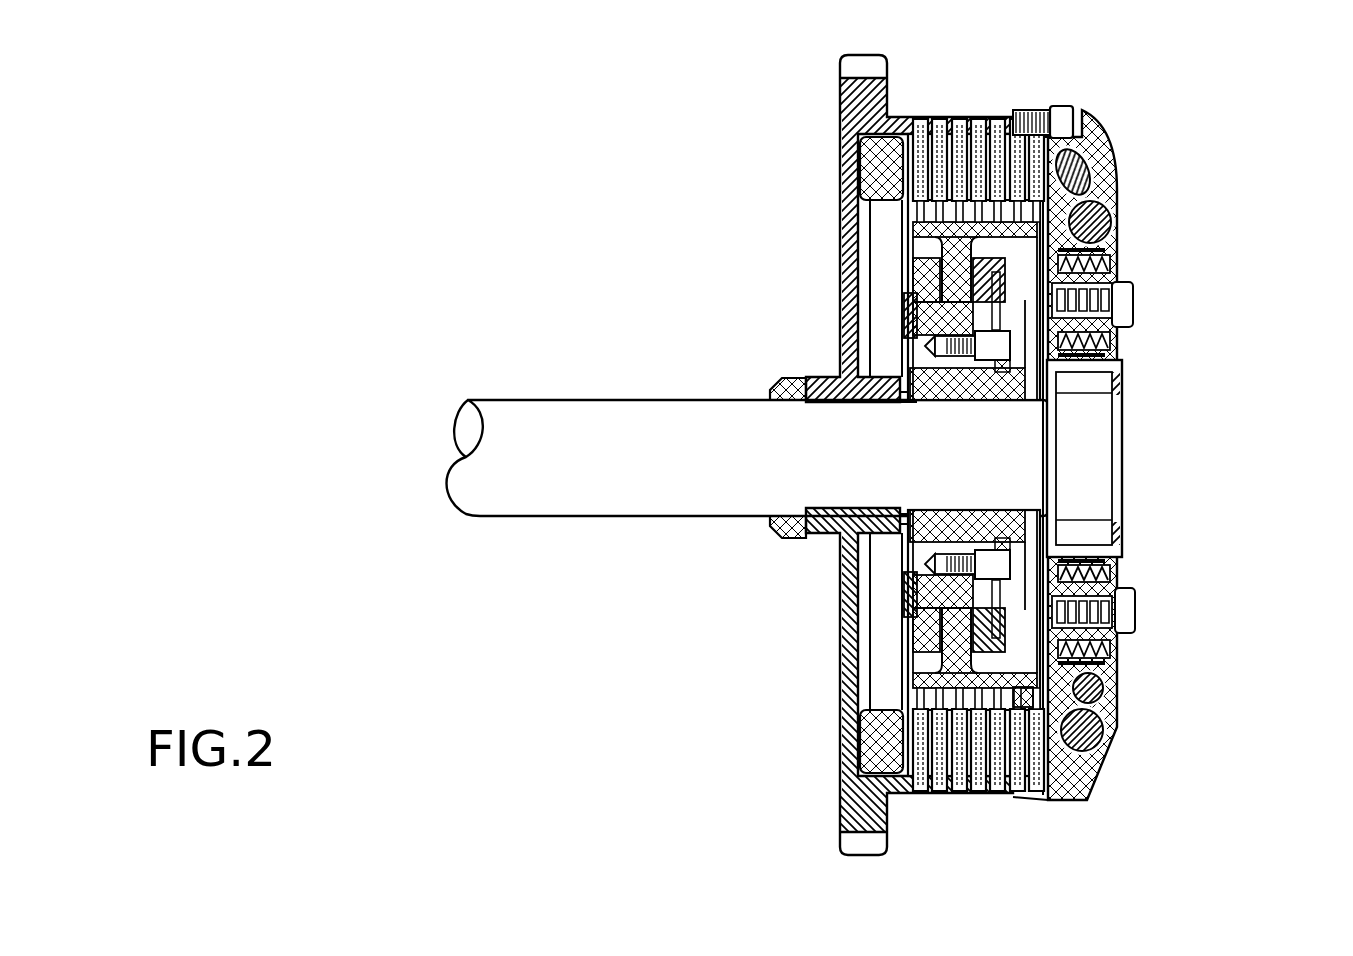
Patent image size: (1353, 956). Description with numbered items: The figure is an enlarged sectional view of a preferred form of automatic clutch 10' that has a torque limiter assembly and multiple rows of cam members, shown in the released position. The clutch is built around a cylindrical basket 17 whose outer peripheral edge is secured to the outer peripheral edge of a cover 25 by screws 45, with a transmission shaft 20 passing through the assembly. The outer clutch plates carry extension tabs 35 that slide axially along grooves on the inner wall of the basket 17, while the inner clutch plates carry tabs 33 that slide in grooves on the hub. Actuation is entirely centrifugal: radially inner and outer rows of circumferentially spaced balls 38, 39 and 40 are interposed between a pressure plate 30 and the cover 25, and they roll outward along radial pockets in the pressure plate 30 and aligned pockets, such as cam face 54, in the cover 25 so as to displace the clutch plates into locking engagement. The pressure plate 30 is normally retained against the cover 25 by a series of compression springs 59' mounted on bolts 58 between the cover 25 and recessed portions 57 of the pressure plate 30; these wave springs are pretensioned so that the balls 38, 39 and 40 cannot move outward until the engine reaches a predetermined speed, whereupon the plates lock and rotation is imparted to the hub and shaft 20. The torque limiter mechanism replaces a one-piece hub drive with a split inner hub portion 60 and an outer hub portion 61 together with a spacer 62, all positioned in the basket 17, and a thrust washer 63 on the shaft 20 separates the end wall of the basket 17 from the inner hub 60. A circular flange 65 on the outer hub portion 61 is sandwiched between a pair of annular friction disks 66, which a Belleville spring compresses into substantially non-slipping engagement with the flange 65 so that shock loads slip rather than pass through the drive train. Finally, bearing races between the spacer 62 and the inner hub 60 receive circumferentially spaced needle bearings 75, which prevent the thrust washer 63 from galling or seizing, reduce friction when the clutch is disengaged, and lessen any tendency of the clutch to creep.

The automatic clutch 10' is at (1164, 475).
The basket 17 is at (900, 793).
The transmission shaft 20 is at (563, 518).
The cover 25 is at (1113, 160).
The pressure plate 30 is at (1068, 165).
The tabs 33 is at (1030, 703).
The extension tabs 35 is at (1017, 784).
The cam member 38 is at (1085, 674).
The cam member 39 is at (1108, 220).
The cam member 40 is at (1093, 732).
The screws 45 is at (1080, 114).
The pocket or cam face 54 is at (1125, 608).
The recessed portion 57 is at (1112, 262).
The bolt 58 is at (1122, 306).
The compression spring 59' is at (1159, 376).
The inner hub portion 60 is at (920, 632).
The outer hub portion 61 is at (940, 670).
The spacer 62 is at (873, 731).
The thrust washer 63 is at (790, 378).
The circular flange 65 is at (960, 270).
The annular friction disks 66 is at (940, 293).
The needle bearings 75 is at (910, 322).